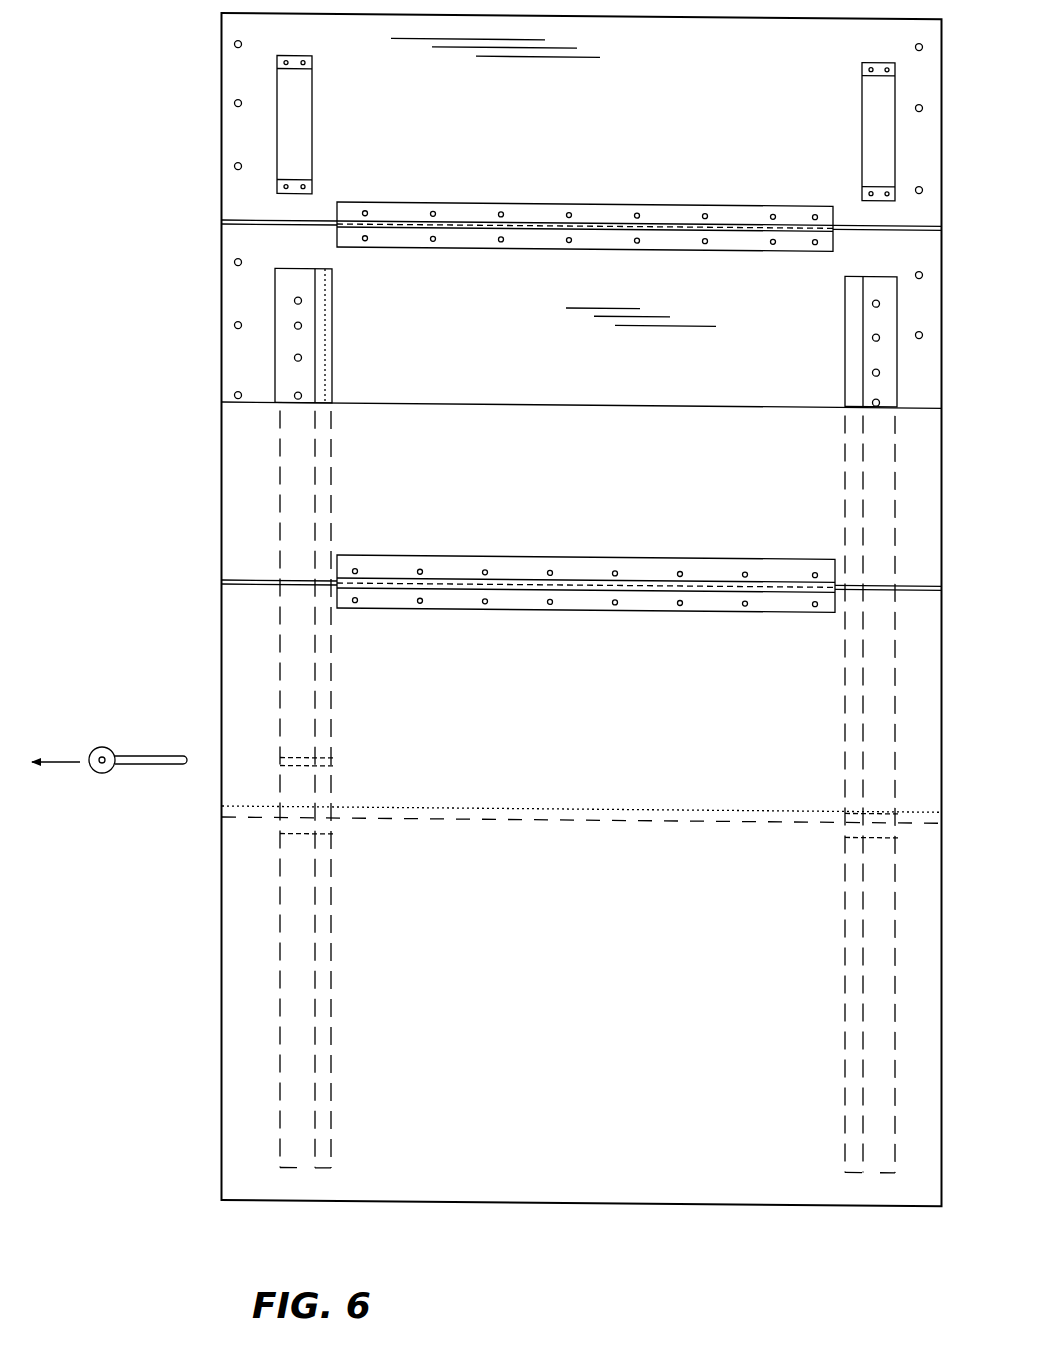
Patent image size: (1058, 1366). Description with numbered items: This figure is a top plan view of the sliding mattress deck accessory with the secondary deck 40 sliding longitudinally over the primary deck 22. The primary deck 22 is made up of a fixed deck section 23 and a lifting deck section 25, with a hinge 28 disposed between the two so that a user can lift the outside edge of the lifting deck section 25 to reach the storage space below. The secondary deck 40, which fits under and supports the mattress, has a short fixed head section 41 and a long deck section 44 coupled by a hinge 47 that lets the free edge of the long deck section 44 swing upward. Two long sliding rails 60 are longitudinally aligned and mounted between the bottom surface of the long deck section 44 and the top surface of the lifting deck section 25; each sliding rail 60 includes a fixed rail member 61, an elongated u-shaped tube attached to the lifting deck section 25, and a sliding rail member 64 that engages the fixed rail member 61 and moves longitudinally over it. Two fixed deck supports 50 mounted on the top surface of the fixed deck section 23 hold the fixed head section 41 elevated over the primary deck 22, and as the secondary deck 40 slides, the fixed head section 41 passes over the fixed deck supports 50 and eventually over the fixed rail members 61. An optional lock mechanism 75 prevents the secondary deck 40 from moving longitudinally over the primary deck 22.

The primary deck 22 is at (221, 76).
The fixed deck section 23 is at (600, 151).
The lifting deck section 25 is at (592, 377).
The hinge 28 is at (633, 204).
The secondary deck 40 is at (694, 400).
The fixed head section 41 is at (487, 480).
The long deck section 44 is at (510, 915).
The hinge 47 is at (588, 552).
The fixed deck support 50 is at (312, 123).
The long sliding rail 60 is at (334, 318).
The fixed rail member 61 is at (331, 493).
The sliding rail member 64 is at (330, 1000).
The lock mechanism 75 is at (148, 744).